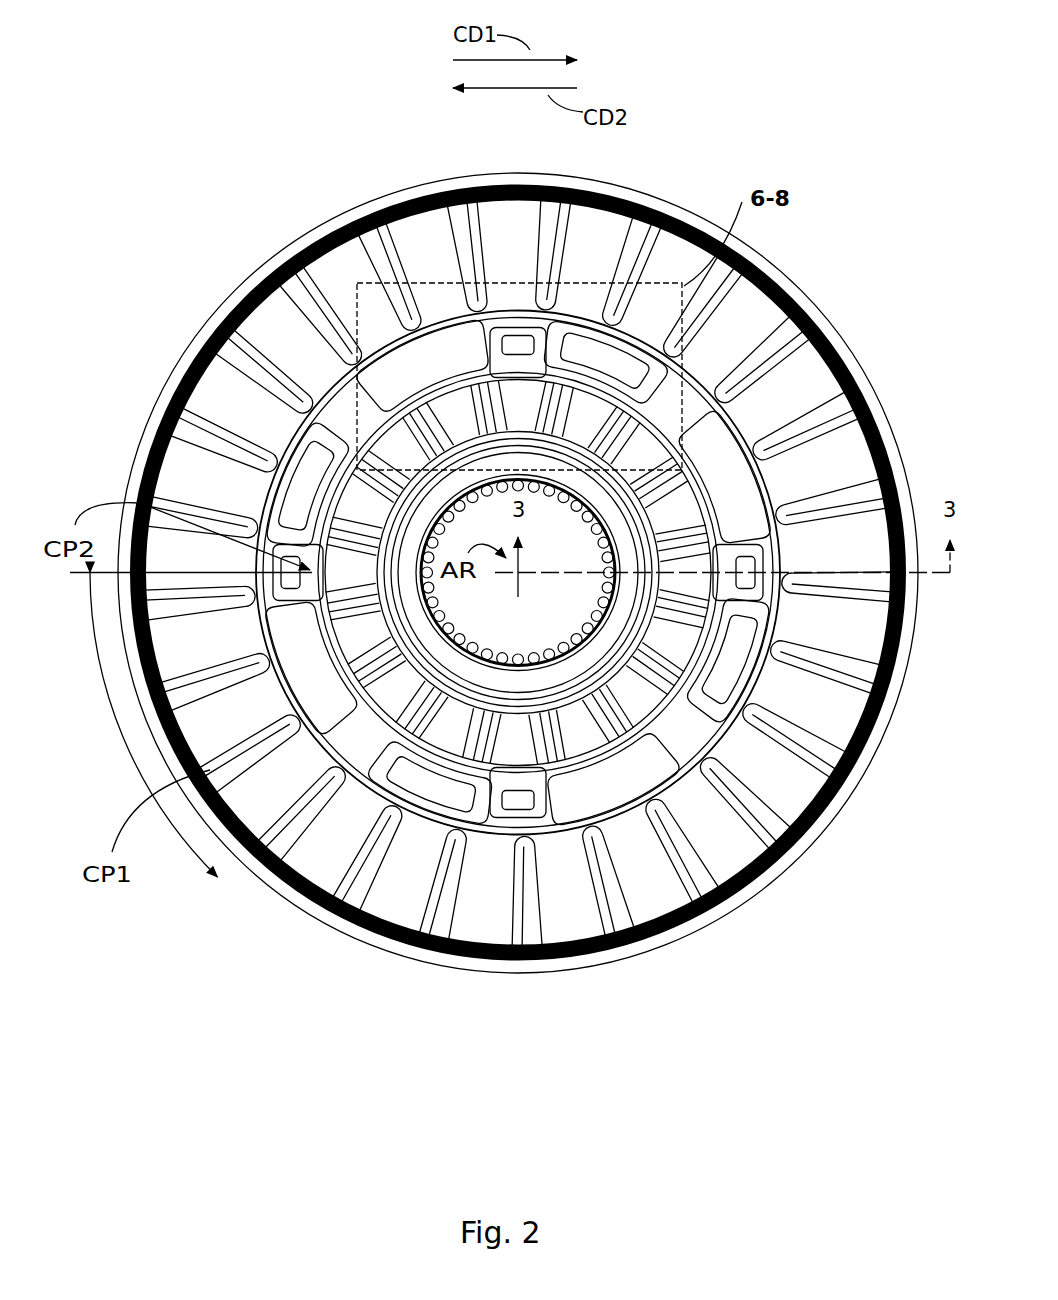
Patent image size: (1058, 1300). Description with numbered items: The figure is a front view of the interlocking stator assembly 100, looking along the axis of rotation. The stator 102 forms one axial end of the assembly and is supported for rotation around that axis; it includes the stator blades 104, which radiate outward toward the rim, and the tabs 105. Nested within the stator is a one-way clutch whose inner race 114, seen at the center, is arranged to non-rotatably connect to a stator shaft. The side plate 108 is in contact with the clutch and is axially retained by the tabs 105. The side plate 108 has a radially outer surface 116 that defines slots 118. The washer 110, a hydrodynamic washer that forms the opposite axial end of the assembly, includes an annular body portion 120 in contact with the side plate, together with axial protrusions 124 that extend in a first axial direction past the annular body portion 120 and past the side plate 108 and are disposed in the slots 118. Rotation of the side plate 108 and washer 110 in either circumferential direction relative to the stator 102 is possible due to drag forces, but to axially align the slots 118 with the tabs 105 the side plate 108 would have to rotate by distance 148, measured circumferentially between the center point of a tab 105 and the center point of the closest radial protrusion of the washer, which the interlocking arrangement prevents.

The stator assembly 100 is at (822, 62).
The stator 102 is at (243, 275).
The stator blades 104 is at (432, 247).
The tabs 105 is at (682, 740).
The side plate 108 is at (353, 732).
The washer 110 is at (587, 757).
The inner race 114 is at (520, 668).
The radially outer surface 116 is at (387, 768).
The slots 118 is at (437, 787).
The annular body portion 120 is at (335, 498).
The axial protrusions 124 is at (527, 373).
The distance 148 is at (128, 746).